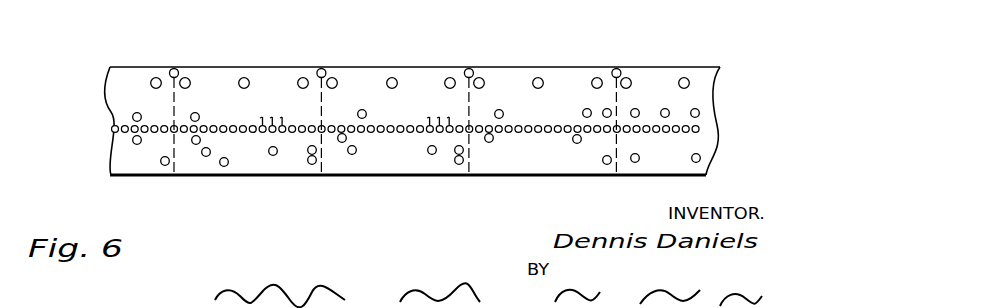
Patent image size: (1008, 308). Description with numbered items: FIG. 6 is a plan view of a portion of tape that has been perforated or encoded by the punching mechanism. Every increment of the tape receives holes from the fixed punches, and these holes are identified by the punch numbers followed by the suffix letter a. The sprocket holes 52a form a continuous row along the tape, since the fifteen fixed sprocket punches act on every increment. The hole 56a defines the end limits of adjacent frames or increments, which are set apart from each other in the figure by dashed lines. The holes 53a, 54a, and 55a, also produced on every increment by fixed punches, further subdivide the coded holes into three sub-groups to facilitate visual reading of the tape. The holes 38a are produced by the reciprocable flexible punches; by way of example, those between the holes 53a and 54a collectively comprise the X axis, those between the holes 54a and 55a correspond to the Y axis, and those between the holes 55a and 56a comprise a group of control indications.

The holes produced by flexible punches 38a is at (133, 117).
The sprocket holes 52a is at (724, 140).
The hole produced by fixed punch 53 53a is at (187, 78).
The hole produced by fixed punch 54 54a is at (245, 78).
The hole produced by fixed punch 55 55a is at (156, 77).
The hole produced by fixed punch 56 56a is at (174, 68).